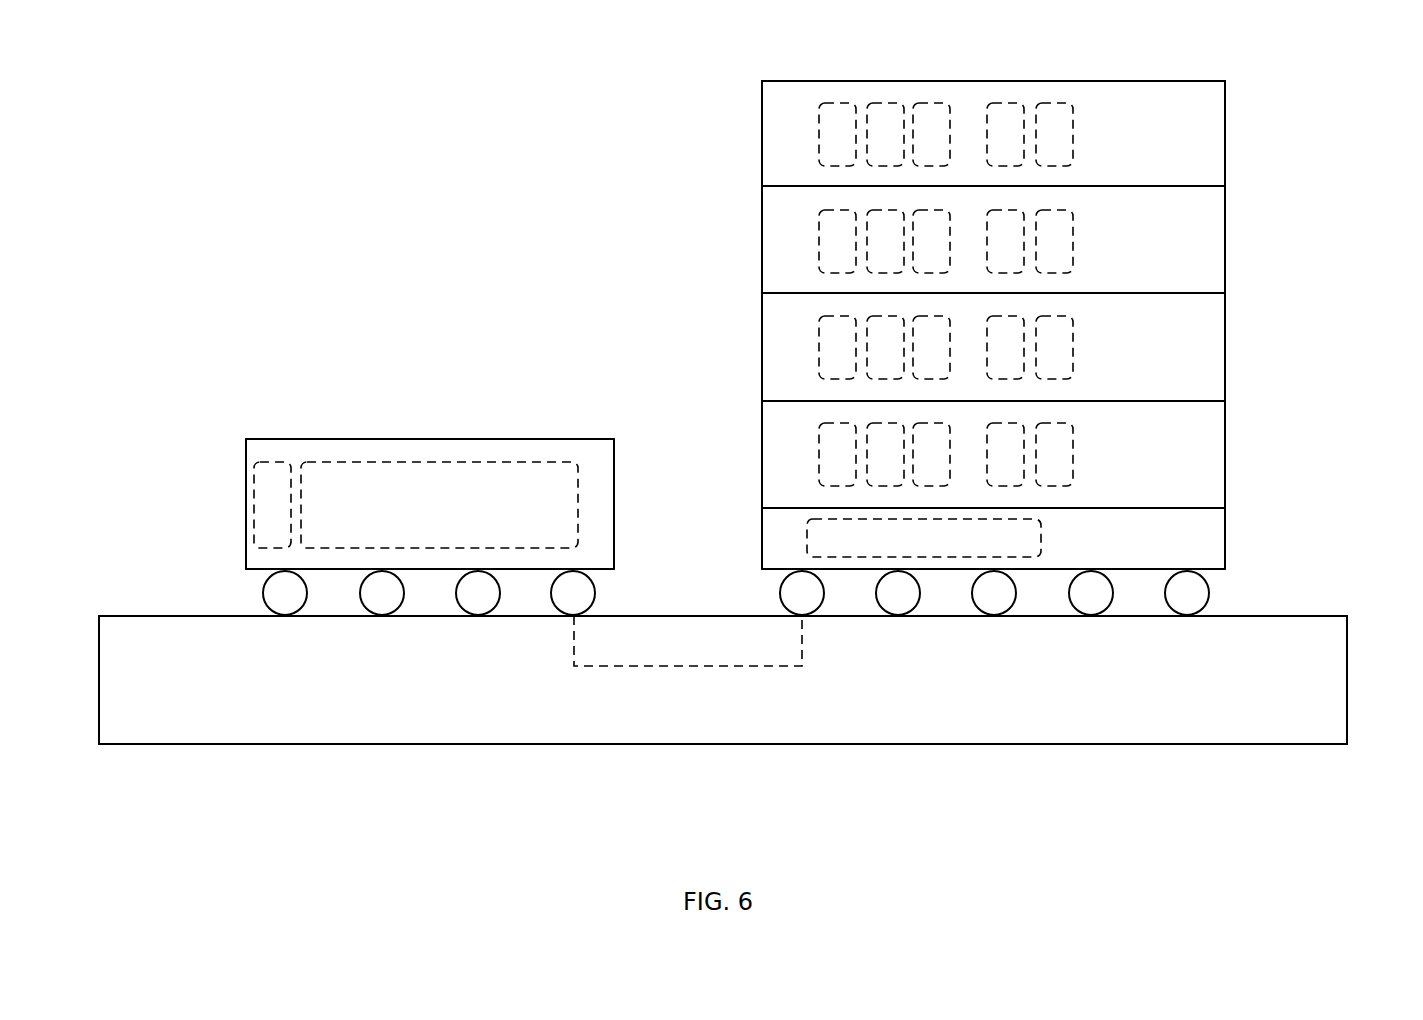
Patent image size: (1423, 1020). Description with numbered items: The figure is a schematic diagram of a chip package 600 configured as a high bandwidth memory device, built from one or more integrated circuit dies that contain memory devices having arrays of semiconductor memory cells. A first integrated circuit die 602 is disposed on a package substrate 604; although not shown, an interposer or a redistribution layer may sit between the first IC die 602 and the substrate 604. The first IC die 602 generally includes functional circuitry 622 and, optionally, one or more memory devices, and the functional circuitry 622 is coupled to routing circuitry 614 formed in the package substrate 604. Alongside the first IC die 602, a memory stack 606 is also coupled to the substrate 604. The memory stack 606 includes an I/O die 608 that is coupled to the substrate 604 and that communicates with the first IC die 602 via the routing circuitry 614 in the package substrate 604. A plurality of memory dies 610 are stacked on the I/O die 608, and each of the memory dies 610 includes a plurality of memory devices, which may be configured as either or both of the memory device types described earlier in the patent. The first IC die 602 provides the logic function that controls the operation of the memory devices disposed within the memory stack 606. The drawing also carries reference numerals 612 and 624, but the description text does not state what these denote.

The chip package 600 is at (233, 275).
The first integrated circuit (IC) die 602 is at (282, 439).
The package substrate 604 is at (277, 717).
The memory stack 606 is at (1052, 358).
The I/O die 608 is at (1188, 549).
The memory dies 610 is at (1180, 143).
The rack wheels 612 is at (899, 597).
The routing circuitry 614 is at (711, 666).
The functional circuitry 622 is at (492, 462).
The rack battery module 624 is at (807, 538).